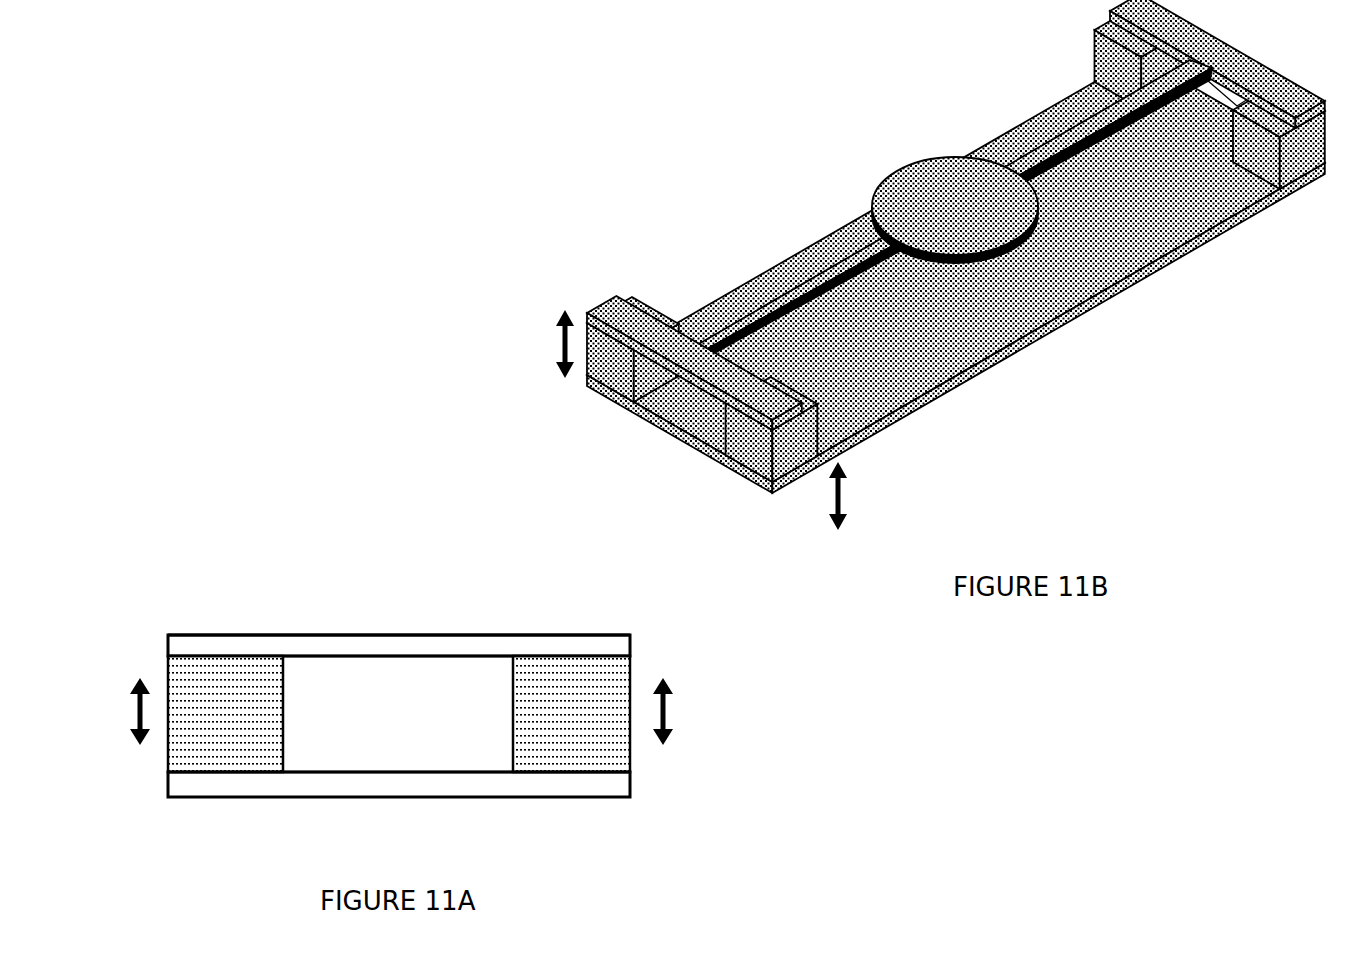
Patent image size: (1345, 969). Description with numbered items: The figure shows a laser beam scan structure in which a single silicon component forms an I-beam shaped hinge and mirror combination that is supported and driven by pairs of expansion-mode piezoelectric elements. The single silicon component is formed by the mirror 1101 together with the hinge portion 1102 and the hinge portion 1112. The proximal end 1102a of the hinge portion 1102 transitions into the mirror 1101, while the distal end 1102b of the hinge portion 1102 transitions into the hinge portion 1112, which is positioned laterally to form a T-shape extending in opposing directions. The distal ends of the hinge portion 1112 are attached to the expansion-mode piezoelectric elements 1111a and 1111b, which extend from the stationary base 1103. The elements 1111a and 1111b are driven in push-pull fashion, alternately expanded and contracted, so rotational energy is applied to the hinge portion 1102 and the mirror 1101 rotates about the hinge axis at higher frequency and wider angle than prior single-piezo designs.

In FIG. 11B, the mirror 1101 is at (892, 156).
In FIG. 11B, the hinge portion 1102 is at (814, 279).
In FIG. 11B, the proximal end of the hinge portion 1102a is at (863, 230).
In FIG. 11B, the distal end of the hinge portion 1102b is at (706, 333).
In FIG. 11A, the distal end of the hinge portion 1102b is at (388, 626).
In FIG. 11B, the stationary base 1103 is at (1040, 348).
In FIG. 11A, the stationary base 1103 is at (540, 798).
In FIG. 11B, the expansion-mode piezoelectric element 1111a is at (787, 462).
In FIG. 11A, the expansion-mode piezoelectric element 1111a is at (646, 756).
In FIG. 11B, the expansion-mode piezoelectric element 1111b is at (606, 380).
In FIG. 11A, the expansion-mode piezoelectric element 1111b is at (147, 750).
In FIG. 11B, the hinge portion 1112 is at (619, 312).
In FIG. 11A, the hinge portion 1112 is at (230, 632).